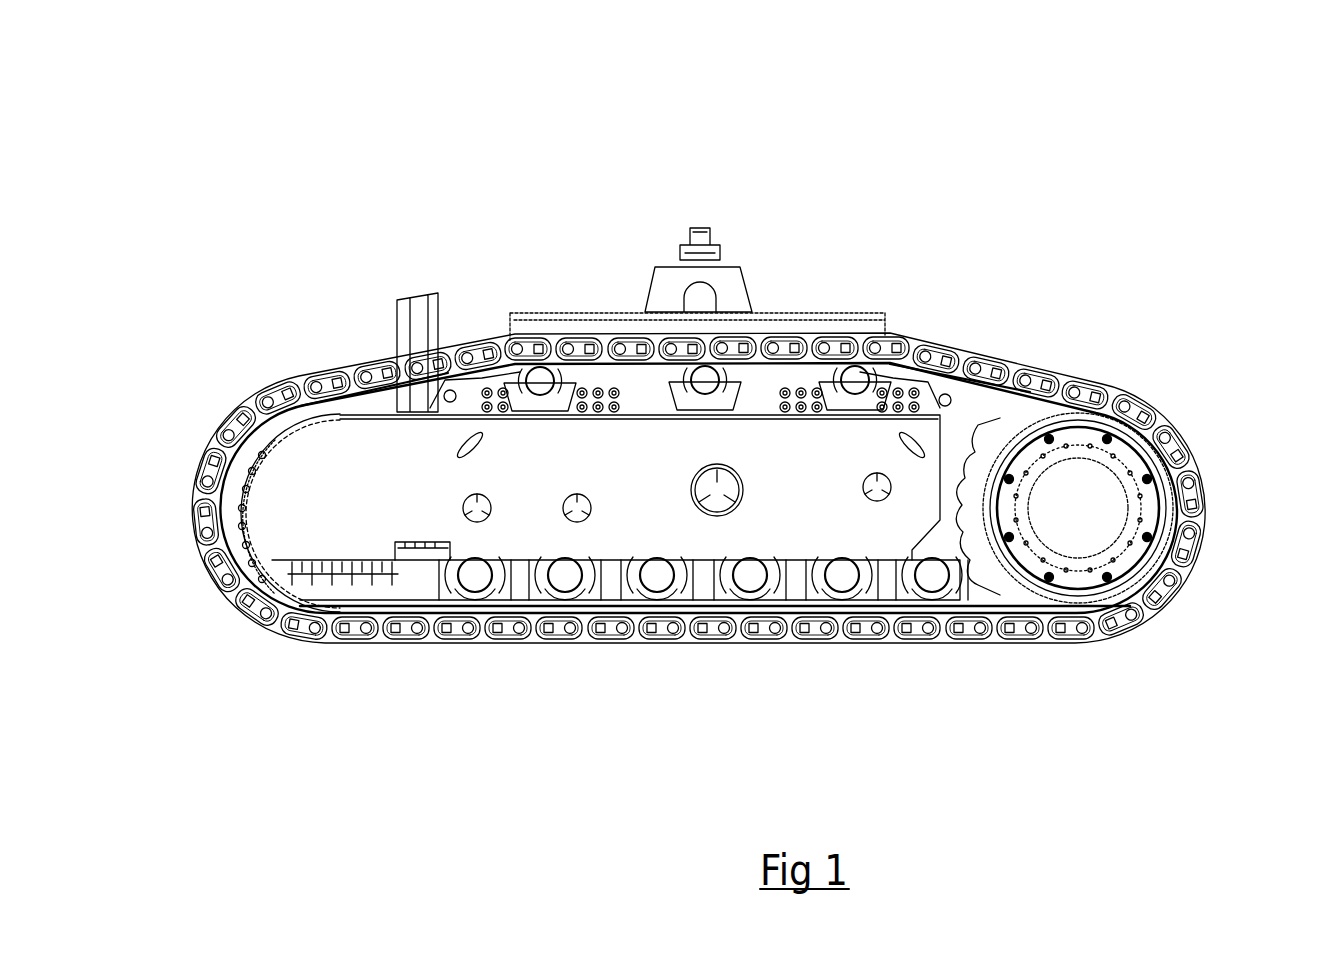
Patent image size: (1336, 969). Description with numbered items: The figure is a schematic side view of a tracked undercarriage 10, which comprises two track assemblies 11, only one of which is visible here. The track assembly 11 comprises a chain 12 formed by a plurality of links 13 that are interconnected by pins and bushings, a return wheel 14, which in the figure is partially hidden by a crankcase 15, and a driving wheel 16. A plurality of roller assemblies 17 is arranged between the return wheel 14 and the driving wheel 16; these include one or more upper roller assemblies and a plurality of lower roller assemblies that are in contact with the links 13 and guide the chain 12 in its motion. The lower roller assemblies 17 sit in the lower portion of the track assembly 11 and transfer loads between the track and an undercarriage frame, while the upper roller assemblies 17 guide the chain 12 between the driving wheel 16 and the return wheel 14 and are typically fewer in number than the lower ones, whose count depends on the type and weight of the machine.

The tracked undercarriage 10 is at (1243, 190).
The track assembly 11 is at (955, 333).
The chain 12 is at (312, 362).
The links 13 is at (1038, 362).
The return wheel 14 is at (233, 435).
The crankcase 15 is at (291, 524).
The driving wheel 16 is at (1085, 467).
The roller assemblies 17 is at (535, 362).